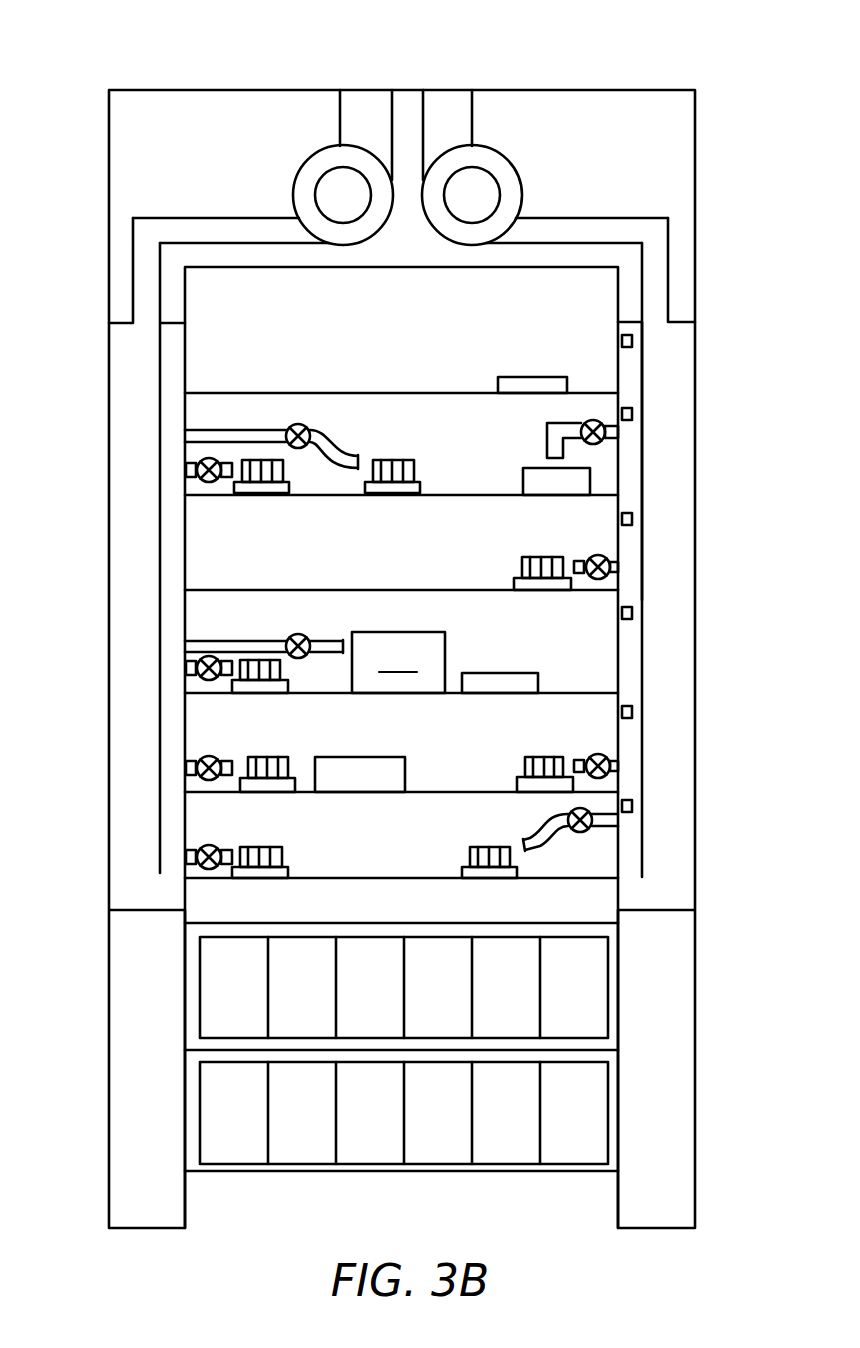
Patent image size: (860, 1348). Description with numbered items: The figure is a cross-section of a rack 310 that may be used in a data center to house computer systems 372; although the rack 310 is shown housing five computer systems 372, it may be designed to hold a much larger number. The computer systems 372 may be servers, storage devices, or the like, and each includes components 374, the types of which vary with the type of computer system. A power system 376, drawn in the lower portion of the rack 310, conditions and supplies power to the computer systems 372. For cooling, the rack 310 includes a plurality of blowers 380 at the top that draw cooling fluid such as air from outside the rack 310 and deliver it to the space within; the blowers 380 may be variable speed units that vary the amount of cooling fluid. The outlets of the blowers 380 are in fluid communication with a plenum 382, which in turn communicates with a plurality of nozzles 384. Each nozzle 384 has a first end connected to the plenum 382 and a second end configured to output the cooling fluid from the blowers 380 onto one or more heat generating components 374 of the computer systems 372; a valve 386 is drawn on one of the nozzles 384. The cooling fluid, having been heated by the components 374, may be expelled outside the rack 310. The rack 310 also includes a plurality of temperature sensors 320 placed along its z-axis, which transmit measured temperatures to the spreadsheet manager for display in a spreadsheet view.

The rack 310 is at (150, 24).
The temperature sensors 320 is at (632, 341).
The computer systems 372 is at (243, 393).
The components 374 is at (503, 376).
The power system 376 is at (581, 988).
The blowers 380 is at (326, 147).
The plenum 382 is at (680, 337).
The nozzles 384 is at (207, 642).
The valve 386 is at (298, 634).